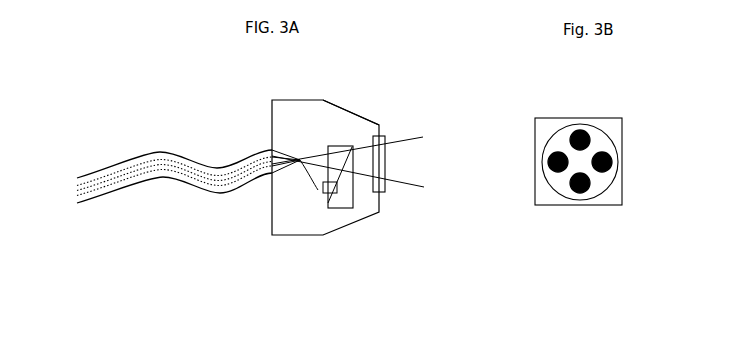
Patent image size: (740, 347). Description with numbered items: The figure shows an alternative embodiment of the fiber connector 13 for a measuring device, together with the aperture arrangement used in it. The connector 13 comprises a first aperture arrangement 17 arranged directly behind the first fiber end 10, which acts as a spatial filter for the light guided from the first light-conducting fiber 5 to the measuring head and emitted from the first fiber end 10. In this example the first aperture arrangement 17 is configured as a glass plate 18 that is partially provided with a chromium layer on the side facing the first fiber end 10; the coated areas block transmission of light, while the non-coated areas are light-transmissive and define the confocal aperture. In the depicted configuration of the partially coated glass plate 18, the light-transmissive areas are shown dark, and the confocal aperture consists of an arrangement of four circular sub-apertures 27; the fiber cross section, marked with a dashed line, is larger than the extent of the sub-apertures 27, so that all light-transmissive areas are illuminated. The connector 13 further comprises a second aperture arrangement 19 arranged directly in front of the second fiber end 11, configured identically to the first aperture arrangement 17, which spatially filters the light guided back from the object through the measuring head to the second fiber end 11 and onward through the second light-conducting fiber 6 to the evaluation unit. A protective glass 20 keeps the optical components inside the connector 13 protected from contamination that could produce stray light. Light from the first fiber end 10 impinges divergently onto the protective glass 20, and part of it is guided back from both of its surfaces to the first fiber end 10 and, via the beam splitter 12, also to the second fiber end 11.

In FIG. 3A, the first light-conducting fiber 5 is at (163, 152).
In FIG. 3A, the second light-conducting fiber 6 is at (167, 173).
In FIG. 3A, the first fiber end 10 is at (272, 145).
In FIG. 3A, the second fiber end 11 is at (327, 185).
In FIG. 3A, the beam splitter 12 is at (347, 146).
In FIG. 3A, the connector 13 is at (347, 108).
In FIG. 3A, the first aperture arrangement 17 is at (300, 157).
In FIG. 3A, the glass plate 18 is at (303, 157).
In FIG. 3B, the glass plate 18 is at (543, 207).
In FIG. 3A, the second aperture arrangement 19 is at (327, 207).
In FIG. 3A, the protective glass 20 is at (378, 190).
In FIG. 3B, the circular sub-apertures 27 is at (603, 177).